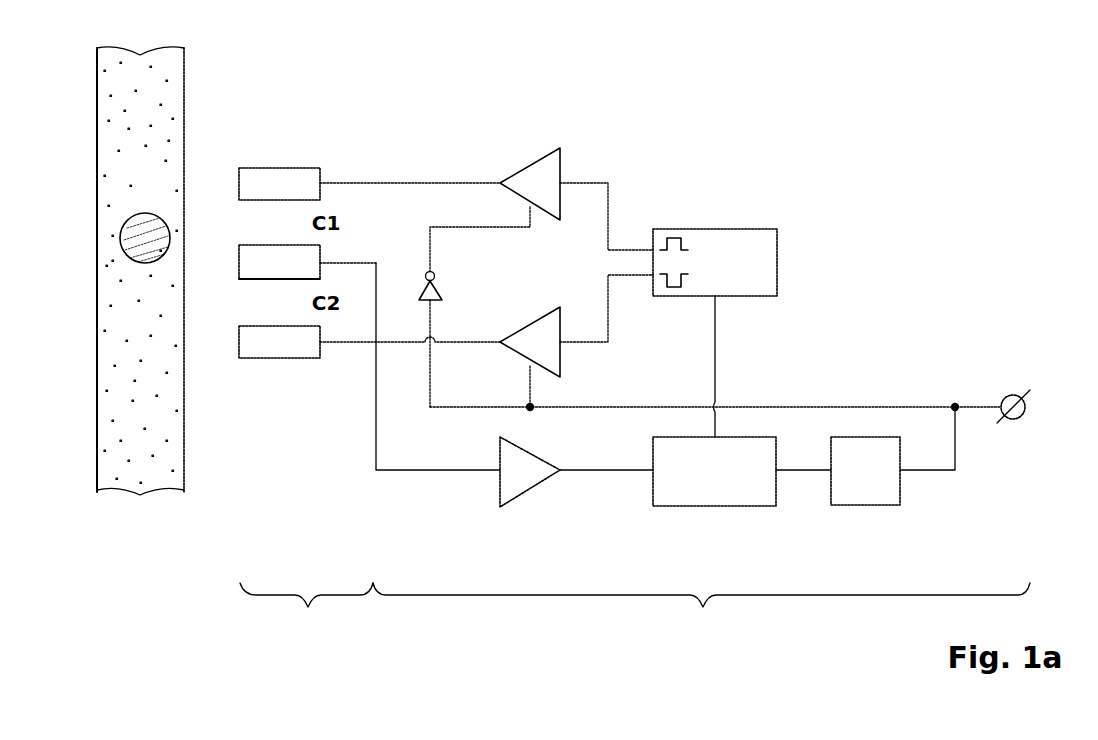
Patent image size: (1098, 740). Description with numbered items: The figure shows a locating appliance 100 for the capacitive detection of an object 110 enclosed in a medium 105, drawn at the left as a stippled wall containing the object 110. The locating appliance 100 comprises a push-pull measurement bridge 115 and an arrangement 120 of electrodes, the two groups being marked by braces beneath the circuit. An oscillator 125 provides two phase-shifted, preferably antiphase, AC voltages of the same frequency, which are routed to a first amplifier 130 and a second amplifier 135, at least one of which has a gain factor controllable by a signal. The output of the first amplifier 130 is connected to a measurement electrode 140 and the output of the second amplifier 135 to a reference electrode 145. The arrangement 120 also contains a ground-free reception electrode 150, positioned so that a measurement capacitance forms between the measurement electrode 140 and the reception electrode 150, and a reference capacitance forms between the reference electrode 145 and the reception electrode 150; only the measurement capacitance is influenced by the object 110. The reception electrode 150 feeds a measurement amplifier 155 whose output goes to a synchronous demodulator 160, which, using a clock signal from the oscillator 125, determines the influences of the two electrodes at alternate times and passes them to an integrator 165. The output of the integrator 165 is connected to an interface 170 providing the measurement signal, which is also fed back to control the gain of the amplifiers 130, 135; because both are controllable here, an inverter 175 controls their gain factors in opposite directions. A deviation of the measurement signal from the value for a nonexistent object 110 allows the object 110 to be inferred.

The locating appliance 100 is at (866, 97).
The medium 105 is at (107, 186).
The object 110 is at (137, 242).
The push-pull measurement bridge 115 is at (701, 608).
The arrangement of electrodes 120 is at (306, 608).
The oscillator 125 is at (714, 229).
The first amplifier 130 is at (531, 164).
The second amplifier 135 is at (528, 323).
The measurement electrode 140 is at (278, 168).
The reference electrode 145 is at (279, 358).
The reception electrode 150 is at (240, 245).
The measurement amplifier 155 is at (533, 492).
The synchronous demodulator 160 is at (713, 506).
The integrator 165 is at (866, 505).
The interface 170 is at (1010, 394).
The inverter 175 is at (442, 296).